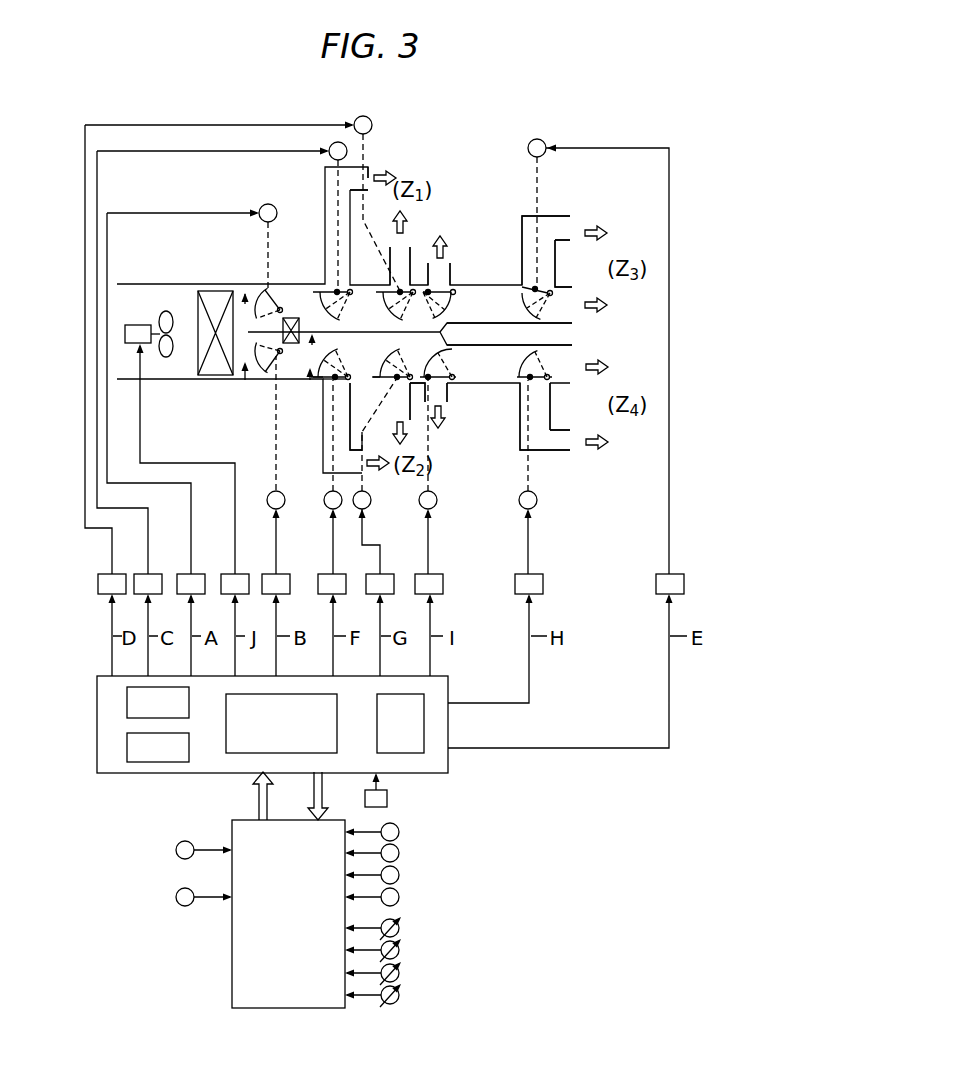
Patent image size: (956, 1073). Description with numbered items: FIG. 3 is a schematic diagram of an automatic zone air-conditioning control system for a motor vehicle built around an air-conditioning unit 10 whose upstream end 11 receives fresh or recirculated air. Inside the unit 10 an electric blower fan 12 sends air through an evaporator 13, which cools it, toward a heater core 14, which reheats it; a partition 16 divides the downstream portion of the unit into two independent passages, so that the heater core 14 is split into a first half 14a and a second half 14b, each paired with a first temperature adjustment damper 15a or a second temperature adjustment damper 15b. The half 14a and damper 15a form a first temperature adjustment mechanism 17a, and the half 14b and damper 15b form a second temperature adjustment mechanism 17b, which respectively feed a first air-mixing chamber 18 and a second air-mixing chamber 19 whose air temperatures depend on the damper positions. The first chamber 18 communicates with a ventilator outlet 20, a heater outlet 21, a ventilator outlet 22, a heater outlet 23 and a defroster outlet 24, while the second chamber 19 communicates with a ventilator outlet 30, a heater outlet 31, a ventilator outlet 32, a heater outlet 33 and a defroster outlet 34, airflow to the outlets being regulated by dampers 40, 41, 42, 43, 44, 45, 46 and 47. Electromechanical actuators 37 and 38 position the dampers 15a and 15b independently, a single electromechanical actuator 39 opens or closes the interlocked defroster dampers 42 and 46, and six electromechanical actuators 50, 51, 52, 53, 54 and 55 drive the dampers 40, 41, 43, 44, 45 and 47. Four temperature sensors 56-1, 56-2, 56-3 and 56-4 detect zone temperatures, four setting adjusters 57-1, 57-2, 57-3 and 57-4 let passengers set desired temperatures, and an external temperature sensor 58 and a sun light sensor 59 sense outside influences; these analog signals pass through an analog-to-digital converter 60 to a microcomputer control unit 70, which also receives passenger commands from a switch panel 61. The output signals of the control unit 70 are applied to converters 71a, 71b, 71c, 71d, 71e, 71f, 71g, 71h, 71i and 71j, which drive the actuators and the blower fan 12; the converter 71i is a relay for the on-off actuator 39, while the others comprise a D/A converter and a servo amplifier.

The air-conditioning unit 10 is at (147, 284).
The upstream end 11 is at (125, 325).
The electric blower fan 12 is at (168, 312).
The evaporator 13 is at (206, 291).
The heater core 14 is at (331, 364).
The first half of heater core 14a is at (278, 300).
The second half of heater core 14b is at (280, 356).
The first temperature adjustment damper 15a is at (270, 285).
The second temperature adjustment damper 15b is at (273, 365).
The partition 16 is at (393, 364).
The first temperature adjustment mechanism 17a is at (257, 274).
The second temperature adjustment mechanism 17b is at (247, 388).
The first air-mixing chamber 18 is at (341, 359).
The second air-mixing chamber 19 is at (284, 369).
The ventilator outlet 20 is at (355, 177).
The heater outlet 21 is at (403, 252).
The ventilator outlet 22 is at (558, 228).
The heater outlet 23 is at (566, 306).
The defroster outlet 24 is at (446, 280).
The ventilator outlet 30 is at (356, 474).
The heater outlet 31 is at (391, 408).
The ventilator outlet 32 is at (555, 450).
The heater outlet 33 is at (566, 363).
The defroster outlet 34 is at (446, 397).
The electromechanical actuator 37 is at (268, 204).
The electromechanical actuator 38 is at (269, 494).
The electromechanical actuator 39 is at (437, 500).
The damper 40 is at (329, 290).
The damper 41 is at (398, 290).
The damper 42 is at (447, 297).
The damper 43 is at (552, 287).
The damper 44 is at (326, 395).
The damper 45 is at (389, 386).
The damper 46 is at (446, 355).
The damper 47 is at (548, 382).
The electromechanical actuator 50 is at (334, 143).
The electromechanical actuator 51 is at (363, 116).
The electromechanical actuator 52 is at (537, 139).
The electromechanical actuator 53 is at (328, 493).
The electromechanical actuator 54 is at (370, 508).
The electromechanical actuator 55 is at (537, 500).
The temperature sensor 56-1 is at (400, 832).
The temperature sensor 56-2 is at (400, 853).
The temperature sensor 56-3 is at (400, 875).
The temperature sensor 56-4 is at (400, 897).
The setting adjuster 57-1 is at (400, 928).
The setting adjuster 57-2 is at (400, 950).
The setting adjuster 57-3 is at (400, 973).
The setting adjuster 57-4 is at (400, 995).
The external temperature sensor 58 is at (176, 851).
The sun light sensor 59 is at (176, 898).
The analog-to-digital converter 60 is at (232, 975).
The switch panel 61 is at (389, 799).
The control unit 70 is at (137, 773).
The converter 71a is at (195, 574).
The converter 71b is at (281, 574).
The converter 71c is at (150, 574).
The converter 71d is at (103, 574).
The converter 71e is at (678, 574).
The converter 71f is at (335, 574).
The converter 71g is at (384, 574).
The converter 71h is at (538, 574).
The converter 71i is at (435, 574).
The converter 71j is at (240, 574).